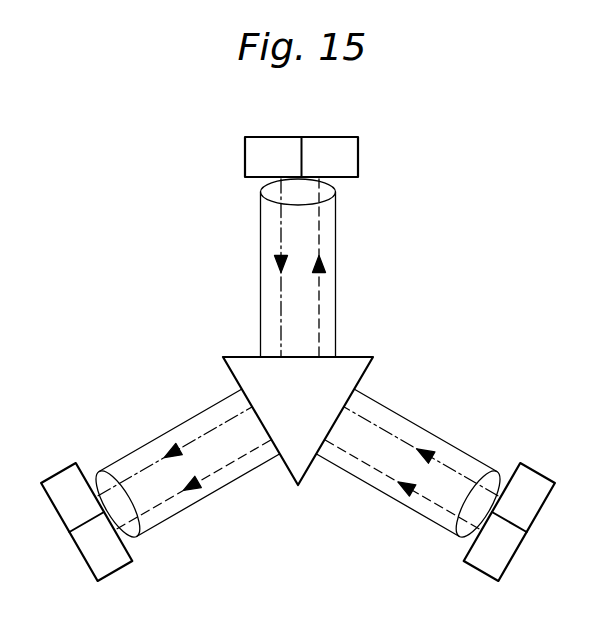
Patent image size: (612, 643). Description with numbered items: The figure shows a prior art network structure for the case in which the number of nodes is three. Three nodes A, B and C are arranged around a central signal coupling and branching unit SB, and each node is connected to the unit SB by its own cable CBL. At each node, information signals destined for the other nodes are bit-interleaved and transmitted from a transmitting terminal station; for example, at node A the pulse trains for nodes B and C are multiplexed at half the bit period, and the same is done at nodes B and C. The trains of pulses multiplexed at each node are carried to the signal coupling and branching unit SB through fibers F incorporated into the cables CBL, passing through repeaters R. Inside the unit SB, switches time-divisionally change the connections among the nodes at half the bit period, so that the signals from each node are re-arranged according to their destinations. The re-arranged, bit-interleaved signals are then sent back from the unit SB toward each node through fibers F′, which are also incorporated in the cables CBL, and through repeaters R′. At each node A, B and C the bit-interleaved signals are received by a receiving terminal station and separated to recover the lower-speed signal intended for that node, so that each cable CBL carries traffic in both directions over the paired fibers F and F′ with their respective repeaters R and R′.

The node A is at (301, 146).
The node B is at (86, 522).
The node C is at (509, 522).
The signal coupling and branching unit SB is at (298, 421).
The cable CBL is at (338, 268).
The fiber F is at (283, 206).
The fiber F′ is at (320, 205).
The repeater R is at (282, 268).
The repeater R′ is at (319, 270).